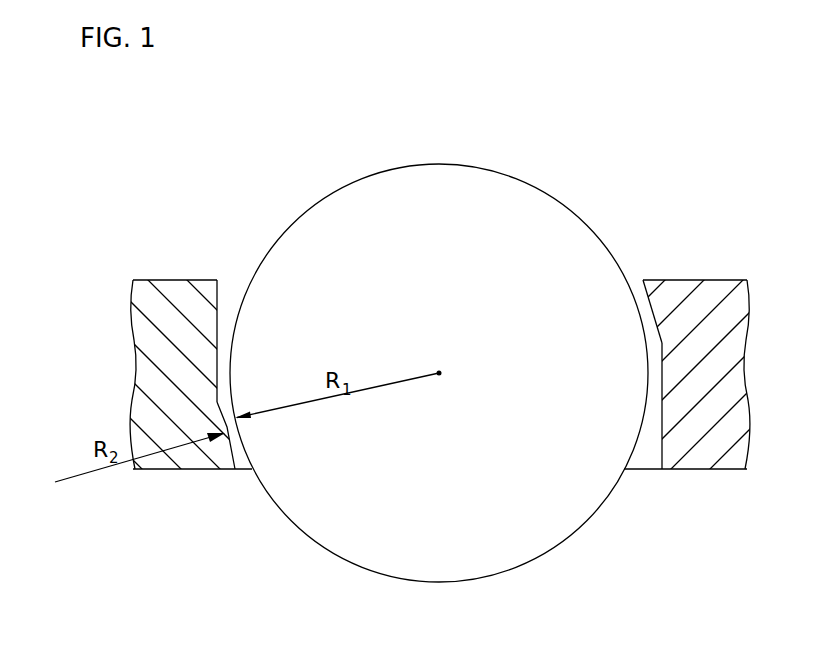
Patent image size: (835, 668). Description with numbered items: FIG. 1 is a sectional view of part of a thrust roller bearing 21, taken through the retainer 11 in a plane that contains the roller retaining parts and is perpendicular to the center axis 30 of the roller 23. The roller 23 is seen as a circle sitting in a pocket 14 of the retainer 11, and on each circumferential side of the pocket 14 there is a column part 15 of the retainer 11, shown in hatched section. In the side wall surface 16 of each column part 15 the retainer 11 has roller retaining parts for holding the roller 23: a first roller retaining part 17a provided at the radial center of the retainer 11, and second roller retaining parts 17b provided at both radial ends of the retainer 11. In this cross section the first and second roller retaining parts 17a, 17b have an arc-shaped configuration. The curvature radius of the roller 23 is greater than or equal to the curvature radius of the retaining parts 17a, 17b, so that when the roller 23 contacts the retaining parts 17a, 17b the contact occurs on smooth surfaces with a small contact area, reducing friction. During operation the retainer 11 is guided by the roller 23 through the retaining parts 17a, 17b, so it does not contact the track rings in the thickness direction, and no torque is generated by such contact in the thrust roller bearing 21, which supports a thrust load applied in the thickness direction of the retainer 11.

The retainer 11 is at (450, 406).
The pocket 14 is at (641, 461).
The column part 15 is at (190, 455).
The side wall surface 16 is at (217, 303).
The first roller retaining part 17a is at (653, 303).
The second roller retaining part 17b is at (232, 463).
The thrust roller bearing 21 is at (743, 170).
The roller 23 is at (483, 543).
The center axis of the roller 30 is at (439, 375).